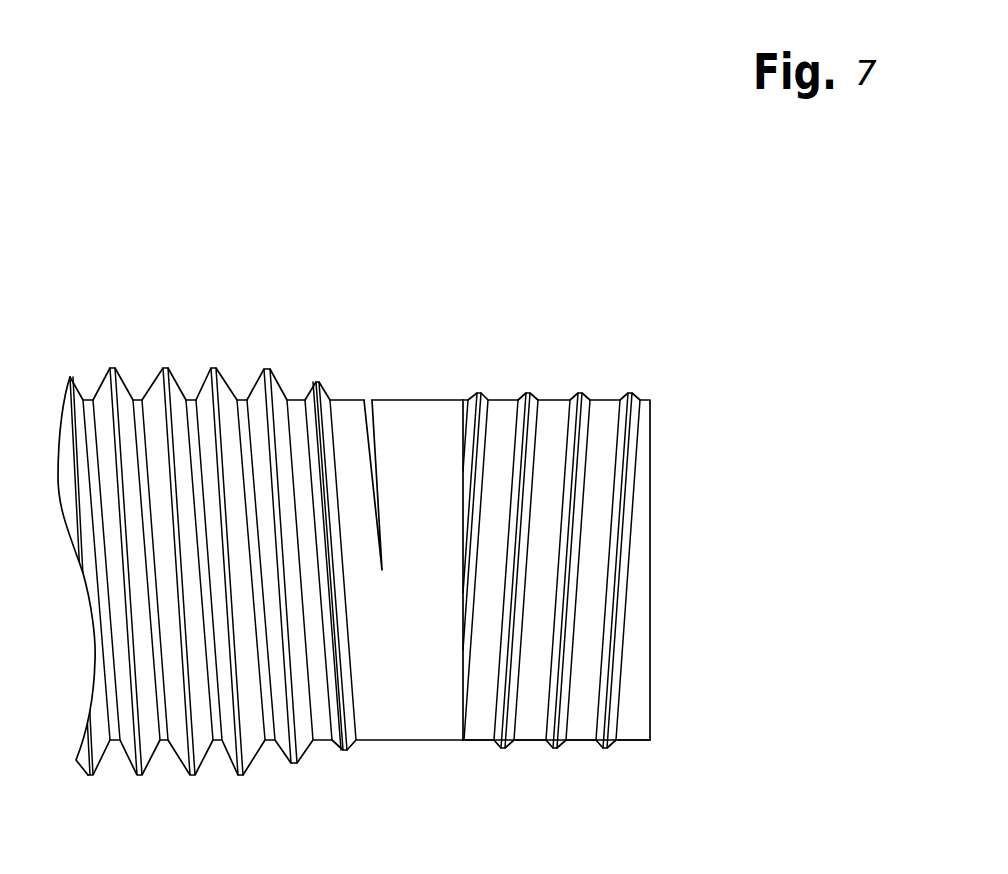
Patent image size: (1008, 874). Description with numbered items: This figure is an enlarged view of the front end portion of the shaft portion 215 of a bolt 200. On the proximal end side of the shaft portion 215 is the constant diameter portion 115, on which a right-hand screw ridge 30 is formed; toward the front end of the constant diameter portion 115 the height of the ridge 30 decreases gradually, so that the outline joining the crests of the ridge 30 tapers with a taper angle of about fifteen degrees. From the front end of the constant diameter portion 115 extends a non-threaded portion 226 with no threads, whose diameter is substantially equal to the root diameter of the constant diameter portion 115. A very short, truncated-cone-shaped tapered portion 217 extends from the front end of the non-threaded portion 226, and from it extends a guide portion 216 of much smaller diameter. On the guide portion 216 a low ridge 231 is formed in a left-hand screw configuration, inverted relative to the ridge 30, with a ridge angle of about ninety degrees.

The bolt 200 is at (298, 275).
The shaft portion 215 is at (147, 360).
The constant diameter portion 115 is at (213, 365).
The right-hand screw ridge 30 is at (318, 383).
The tapered portion 217 is at (465, 400).
The ridge 231 is at (583, 393).
The non-threaded portion 226 is at (415, 739).
The guide portion 216 is at (478, 742).